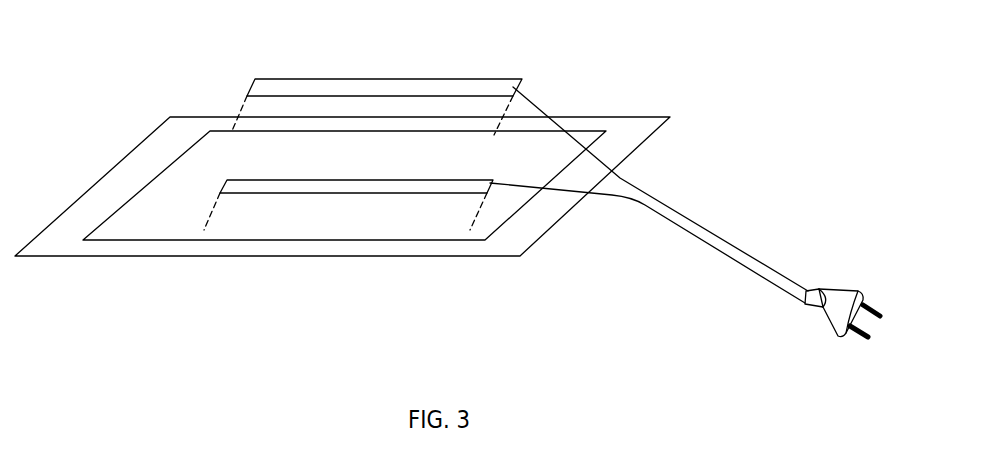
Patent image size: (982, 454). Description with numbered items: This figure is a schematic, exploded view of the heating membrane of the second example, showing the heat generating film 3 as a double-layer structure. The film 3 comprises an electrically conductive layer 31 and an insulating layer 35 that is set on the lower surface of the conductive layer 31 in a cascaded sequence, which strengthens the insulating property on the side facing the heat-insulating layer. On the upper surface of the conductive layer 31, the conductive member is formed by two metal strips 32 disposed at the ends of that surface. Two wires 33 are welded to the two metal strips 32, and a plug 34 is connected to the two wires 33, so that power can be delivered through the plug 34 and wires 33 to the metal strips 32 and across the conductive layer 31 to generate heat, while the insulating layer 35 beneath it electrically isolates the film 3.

The heat generating film 3 is at (162, 83).
The electrically conductive layer 31 is at (163, 188).
The metal strip 32 is at (360, 85).
The wire 33 is at (533, 105).
The plug 34 is at (828, 317).
The insulating layer 35 is at (80, 207).